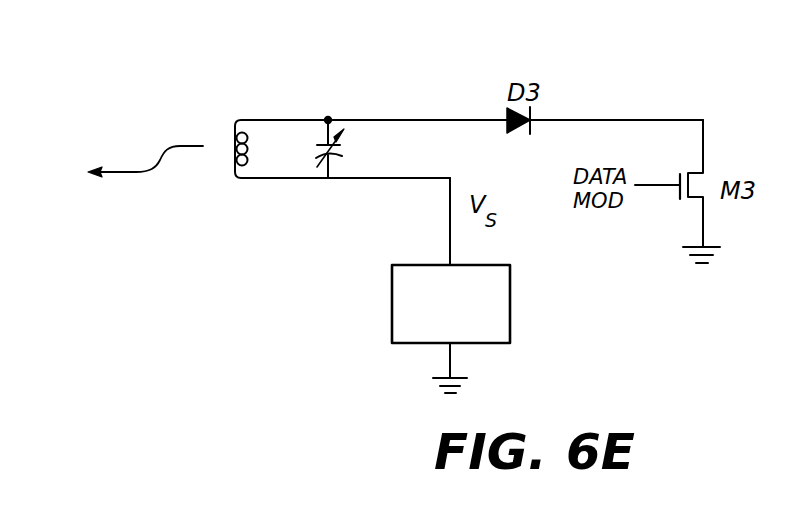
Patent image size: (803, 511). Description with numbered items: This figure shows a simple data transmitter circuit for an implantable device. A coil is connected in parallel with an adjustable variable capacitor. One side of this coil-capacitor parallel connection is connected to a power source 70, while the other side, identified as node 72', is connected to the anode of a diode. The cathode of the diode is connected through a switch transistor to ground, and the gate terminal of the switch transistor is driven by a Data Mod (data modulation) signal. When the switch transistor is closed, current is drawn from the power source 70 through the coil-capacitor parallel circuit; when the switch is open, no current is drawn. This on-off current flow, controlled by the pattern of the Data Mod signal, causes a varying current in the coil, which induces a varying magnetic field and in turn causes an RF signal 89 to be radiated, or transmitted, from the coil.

The RF signal 89 is at (156, 152).
The node 72' is at (318, 104).
The power source 70 is at (510, 296).